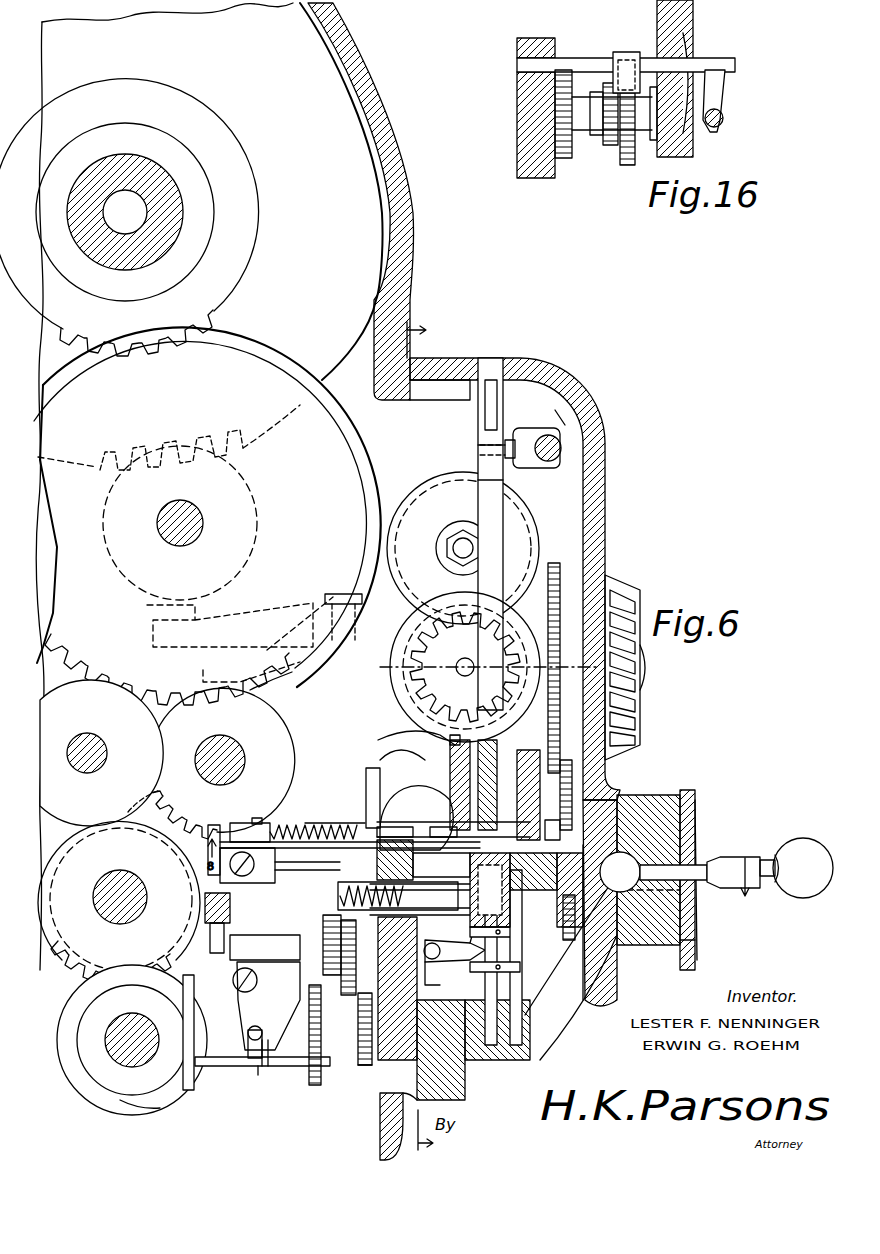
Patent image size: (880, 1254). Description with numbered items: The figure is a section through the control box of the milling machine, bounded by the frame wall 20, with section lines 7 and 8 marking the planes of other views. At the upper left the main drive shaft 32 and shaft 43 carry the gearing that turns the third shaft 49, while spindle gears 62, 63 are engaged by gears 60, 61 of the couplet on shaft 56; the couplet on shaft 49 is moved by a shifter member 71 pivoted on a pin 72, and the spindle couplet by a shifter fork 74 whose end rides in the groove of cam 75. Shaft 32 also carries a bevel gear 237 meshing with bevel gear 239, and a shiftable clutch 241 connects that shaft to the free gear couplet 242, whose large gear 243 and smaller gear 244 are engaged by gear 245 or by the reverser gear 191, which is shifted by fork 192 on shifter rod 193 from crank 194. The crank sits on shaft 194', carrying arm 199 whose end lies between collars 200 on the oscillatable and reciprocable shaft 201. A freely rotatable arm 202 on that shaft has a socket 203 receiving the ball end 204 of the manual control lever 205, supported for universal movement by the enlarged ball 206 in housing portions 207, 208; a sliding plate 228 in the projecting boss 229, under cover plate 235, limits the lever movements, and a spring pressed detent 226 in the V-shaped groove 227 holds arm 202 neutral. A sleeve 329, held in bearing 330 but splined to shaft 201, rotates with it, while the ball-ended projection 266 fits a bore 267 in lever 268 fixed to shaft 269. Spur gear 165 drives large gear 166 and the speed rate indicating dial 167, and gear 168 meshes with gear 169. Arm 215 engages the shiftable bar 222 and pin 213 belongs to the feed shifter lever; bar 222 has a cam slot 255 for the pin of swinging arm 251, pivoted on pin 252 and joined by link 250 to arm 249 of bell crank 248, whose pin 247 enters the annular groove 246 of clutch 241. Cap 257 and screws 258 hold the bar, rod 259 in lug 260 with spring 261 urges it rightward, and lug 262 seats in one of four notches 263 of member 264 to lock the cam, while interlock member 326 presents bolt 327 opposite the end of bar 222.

In FIG. 6, the frame 20 is at (410, 218).
In FIG. 6, the gear 62 is at (238, 264).
In FIG. 6, the gear 60 is at (232, 345).
In FIG. 6, the gear 63 is at (343, 345).
In FIG. 6, the section line 7 is at (425, 737).
In FIG. 6, the gear 61 is at (238, 468).
In FIG. 6, the shaft 56 is at (204, 520).
In FIG. 6, the shifter fork 74 is at (245, 620).
In FIG. 6, the pin 72 is at (340, 596).
In FIG. 6, the cam 75 is at (520, 520).
In FIG. 6, the ball-ended projection 266 is at (520, 438).
In FIG. 6, the bore 267 is at (550, 440).
In FIG. 6, the lever 268 is at (528, 466).
In FIG. 6, the shaft 269 is at (568, 428).
In FIG. 6, the large gear 166 is at (555, 598).
In FIG. 6, the speed rate indicating dial 167 is at (615, 586).
In FIG. 6, the second gear 168 is at (605, 780).
In FIG. 6, the first spur gear 165 is at (528, 748).
In FIG. 6, the notches 263 is at (440, 745).
In FIG. 6, the notched member 264 is at (420, 760).
In FIG. 6, the lug 262 is at (400, 772).
In FIG. 6, the lug 260 is at (367, 790).
In FIG. 6, the rod 259 is at (214, 828).
In FIG. 6, the cap 257 is at (236, 824).
In FIG. 6, the screws 258 is at (258, 820).
In FIG. 6, the spring 261 is at (290, 828).
In FIG. 6, the swinging arm 251 is at (300, 820).
In FIG. 6, the shiftable bar 222 is at (355, 830).
In FIG. 6, the pin 252 is at (256, 864).
In FIG. 6, the cam slot 255 is at (320, 866).
In FIG. 6, the link 250 is at (404, 891).
In FIG. 6, the arm 215 is at (437, 810).
In FIG. 6, the pin 213 is at (453, 839).
In FIG. 6, the spring pressed detent 226 is at (441, 866).
In FIG. 6, the sleeve 329 is at (180, 883).
In FIG. 6, the bearing 330 is at (552, 830).
In FIG. 6, the enlarged ball 206 is at (630, 868).
In FIG. 6, the sliding plate 228 is at (690, 795).
In FIG. 6, the manually operable control lever 205 is at (736, 866).
In FIG. 6, the section arrow 8 is at (744, 888).
In FIG. 6, the cover plate 235 is at (698, 933).
In FIG. 6, the arm 202 is at (540, 930).
In FIG. 6, the collars 200 is at (510, 940).
In FIG. 6, the socket 203 is at (566, 940).
In FIG. 6, the block 207 is at (660, 940).
In FIG. 6, the ball end 204 is at (604, 920).
In FIG. 6, the block 208 is at (650, 950).
In FIG. 6, the projecting boss 229 is at (672, 950).
In FIG. 6, the gear 169 is at (575, 990).
In FIG. 6, the shaft 201 is at (500, 983).
In FIG. 6, the V-shaped groove 227 is at (470, 960).
In FIG. 6, the arm 199 is at (432, 960).
In FIG. 6, the crank arm 194 is at (426, 957).
In FIG. 16, the crank arm 194 is at (727, 101).
In FIG. 6, the shifter member 71 is at (282, 690).
In FIG. 6, the third shaft 49 is at (246, 762).
In FIG. 6, the shaft 43 is at (100, 918).
In FIG. 6, the interlock member 326 is at (205, 912).
In FIG. 6, the bolt 327 is at (230, 950).
In FIG. 6, the main drive shaft 32 is at (120, 1053).
In FIG. 6, the bevel gear 237 is at (123, 1090).
In FIG. 6, the bevel gear 239 is at (188, 1095).
In FIG. 6, the bell crank 248 is at (262, 1072).
In FIG. 6, the pin 247 is at (250, 1066).
In FIG. 6, the annular groove 246 is at (258, 1070).
In FIG. 6, the shiftable clutch 241 is at (266, 1066).
In FIG. 6, the arm 249 is at (278, 985).
In FIG. 6, the gear 245 is at (335, 980).
In FIG. 6, the reverser gear 191 is at (348, 998).
In FIG. 16, the reverser gear 191 is at (625, 166).
In FIG. 6, the gear couplet 242 is at (365, 1068).
In FIG. 6, the smaller gear 244 is at (352, 1082).
In FIG. 6, the large gear 243 is at (315, 1087).
In FIG. 16, the shifter fork 192 is at (626, 52).
In FIG. 16, the shifter rod 193 is at (700, 60).
In FIG. 16, the shaft 194' is at (730, 113).